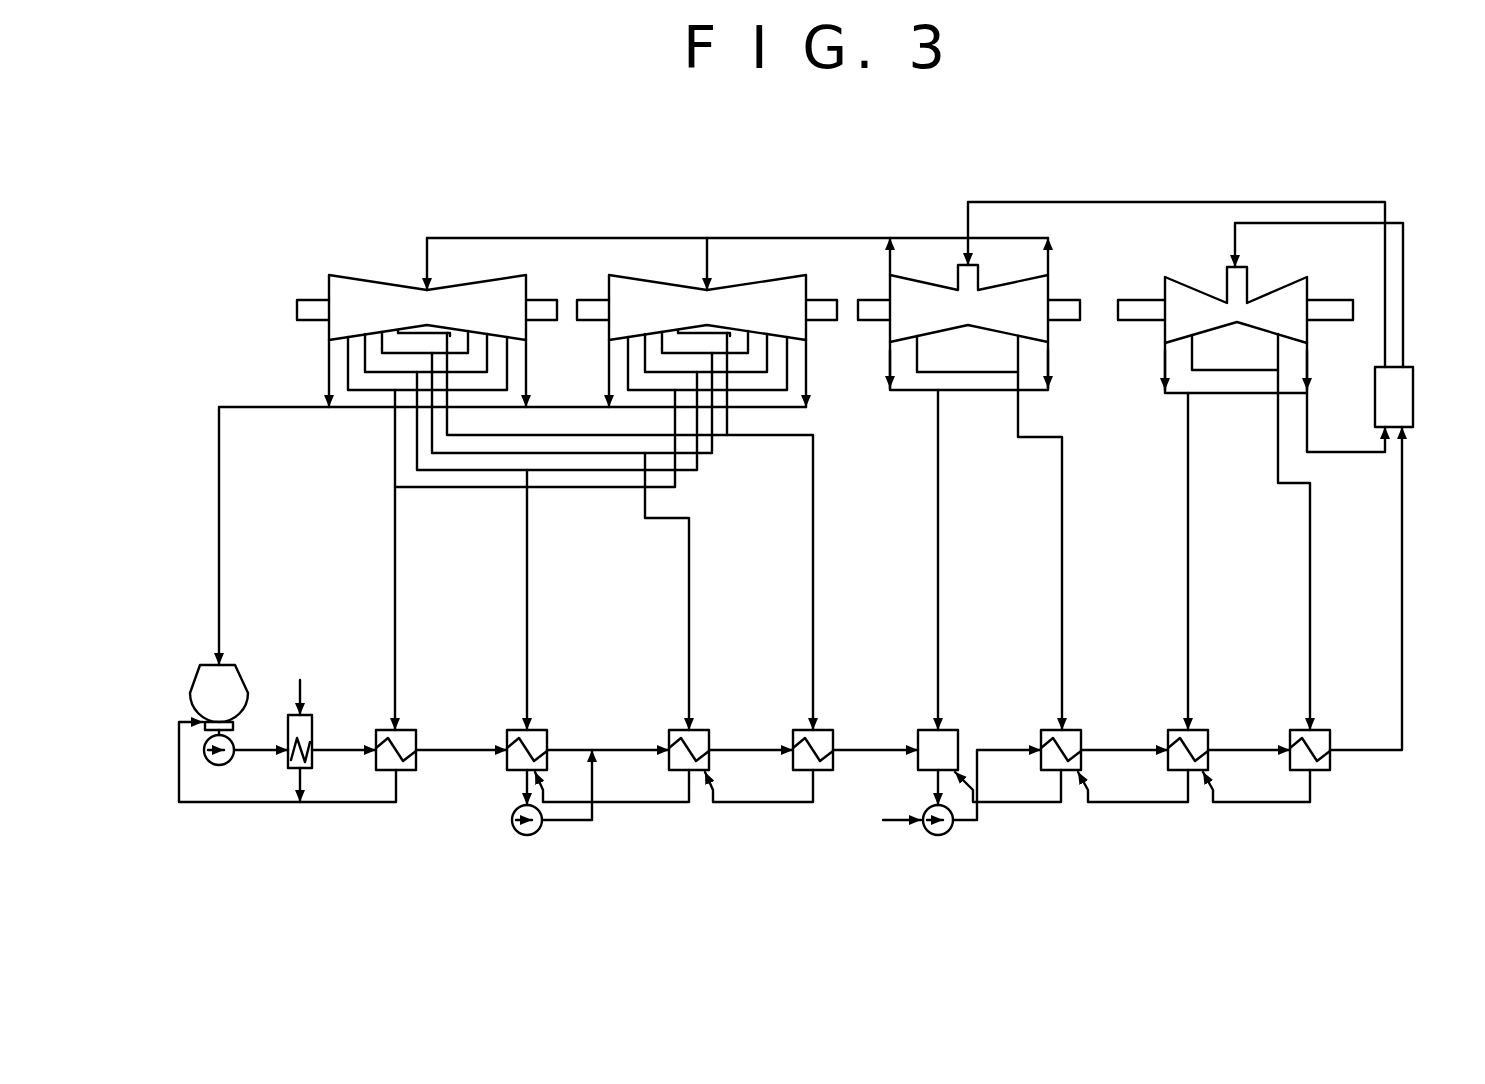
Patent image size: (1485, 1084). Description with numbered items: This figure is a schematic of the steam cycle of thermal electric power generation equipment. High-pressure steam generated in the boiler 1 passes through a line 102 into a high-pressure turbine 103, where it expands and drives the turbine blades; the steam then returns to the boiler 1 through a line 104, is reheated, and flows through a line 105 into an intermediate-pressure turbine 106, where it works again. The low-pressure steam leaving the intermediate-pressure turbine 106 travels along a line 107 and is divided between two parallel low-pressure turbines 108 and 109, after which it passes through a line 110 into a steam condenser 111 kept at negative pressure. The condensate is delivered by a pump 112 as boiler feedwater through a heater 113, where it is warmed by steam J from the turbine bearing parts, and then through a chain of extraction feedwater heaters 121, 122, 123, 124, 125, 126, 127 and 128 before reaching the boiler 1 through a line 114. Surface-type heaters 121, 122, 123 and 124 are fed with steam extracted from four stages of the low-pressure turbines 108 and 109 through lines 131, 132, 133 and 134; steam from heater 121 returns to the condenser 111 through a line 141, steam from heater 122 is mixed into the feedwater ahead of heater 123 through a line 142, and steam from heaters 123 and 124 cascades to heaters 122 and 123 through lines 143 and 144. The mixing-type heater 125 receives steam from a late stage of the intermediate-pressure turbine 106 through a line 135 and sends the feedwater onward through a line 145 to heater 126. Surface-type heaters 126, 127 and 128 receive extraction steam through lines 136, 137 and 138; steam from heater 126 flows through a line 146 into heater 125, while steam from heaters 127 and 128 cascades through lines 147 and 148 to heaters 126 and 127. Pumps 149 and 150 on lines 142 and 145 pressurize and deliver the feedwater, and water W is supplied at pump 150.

The boiler 1 is at (1413, 395).
The line 102 is at (1303, 222).
The high-pressure turbine 103 is at (1178, 275).
The line 104 is at (1362, 453).
The line 105 is at (1096, 202).
The intermediate-pressure turbine 106 is at (919, 278).
The line 107 is at (812, 237).
The low-pressure turbine 108 is at (623, 271).
The low-pressure turbine 109 is at (354, 272).
The line 110 is at (278, 408).
The steam condenser 111 is at (237, 670).
The pump 112 is at (219, 766).
The heater 113 is at (312, 728).
The line 114 is at (1403, 632).
The extraction feedwater heater 121 is at (416, 732).
The extraction feedwater heater 122 is at (548, 732).
The extraction feedwater heater 123 is at (710, 732).
The extraction feedwater heater 124 is at (834, 732).
The extraction feedwater heater 125 is at (957, 732).
The extraction feedwater heater 126 is at (1080, 732).
The extraction feedwater heater 127 is at (1206, 734).
The extraction feedwater heater 128 is at (1329, 734).
The line 131 is at (397, 563).
The line 132 is at (529, 563).
The line 133 is at (691, 563).
The line 134 is at (815, 563).
The line 135 is at (940, 563).
The line 136 is at (1064, 563).
The line 137 is at (1190, 563).
The line 138 is at (1312, 563).
The line 141 is at (340, 803).
The line 142 is at (522, 782).
The line 143 is at (648, 803).
The line 144 is at (768, 803).
The line 145 is at (967, 812).
The line 146 is at (1035, 803).
The line 147 is at (1143, 803).
The line 148 is at (1270, 803).
The pump 149 is at (520, 834).
The pump 150 is at (932, 836).
The steam J is at (299, 678).
The water W is at (884, 820).